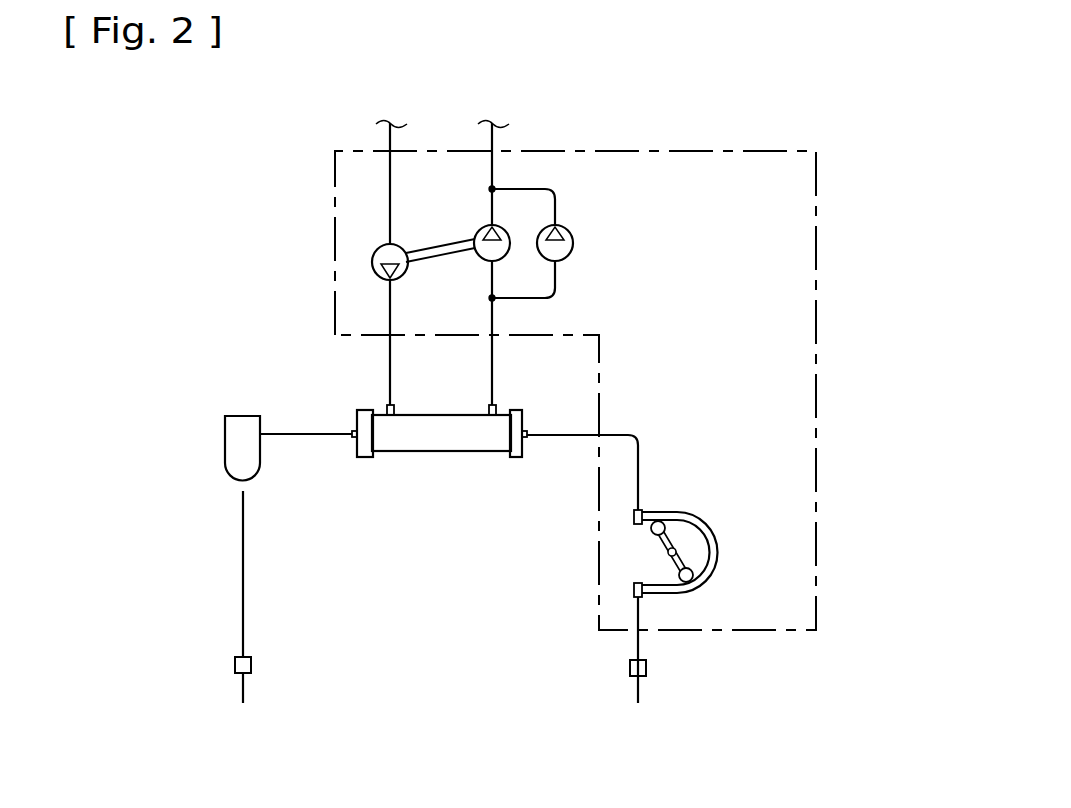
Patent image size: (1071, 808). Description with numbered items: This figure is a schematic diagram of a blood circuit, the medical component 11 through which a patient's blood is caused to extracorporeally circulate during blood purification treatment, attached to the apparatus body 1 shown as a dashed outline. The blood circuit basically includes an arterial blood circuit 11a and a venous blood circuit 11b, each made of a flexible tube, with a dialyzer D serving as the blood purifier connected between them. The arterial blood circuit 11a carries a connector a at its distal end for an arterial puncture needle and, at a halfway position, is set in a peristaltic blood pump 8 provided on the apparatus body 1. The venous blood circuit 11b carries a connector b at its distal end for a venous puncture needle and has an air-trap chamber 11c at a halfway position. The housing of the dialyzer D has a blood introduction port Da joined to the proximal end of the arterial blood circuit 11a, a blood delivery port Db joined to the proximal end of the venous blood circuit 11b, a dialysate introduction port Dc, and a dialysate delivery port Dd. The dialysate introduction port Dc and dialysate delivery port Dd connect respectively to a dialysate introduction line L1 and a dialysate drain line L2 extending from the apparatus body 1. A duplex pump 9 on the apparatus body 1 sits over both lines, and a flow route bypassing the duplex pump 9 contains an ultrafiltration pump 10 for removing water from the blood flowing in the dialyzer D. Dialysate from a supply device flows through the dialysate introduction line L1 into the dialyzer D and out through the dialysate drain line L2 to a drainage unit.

The apparatus body 1 is at (816, 250).
The duplex pump 9 is at (433, 240).
The ultrafiltration pump 10 is at (574, 244).
The dialysate introduction line L1 is at (389, 372).
The dialysate drain line L2 is at (492, 365).
The dialyzer D is at (445, 460).
The blood introduction port Da is at (524, 440).
The blood delivery port Db is at (354, 440).
The dialysate introduction port Dc is at (385, 408).
The dialysate delivery port Dd is at (497, 407).
The medical component 11 is at (428, 559).
The arterial blood circuit 11a is at (640, 464).
The venous blood circuit 11b is at (243, 537).
The air-trap chamber 11c is at (225, 456).
The blood pump 8 is at (730, 560).
The connector a is at (648, 667).
The connector b is at (235, 666).